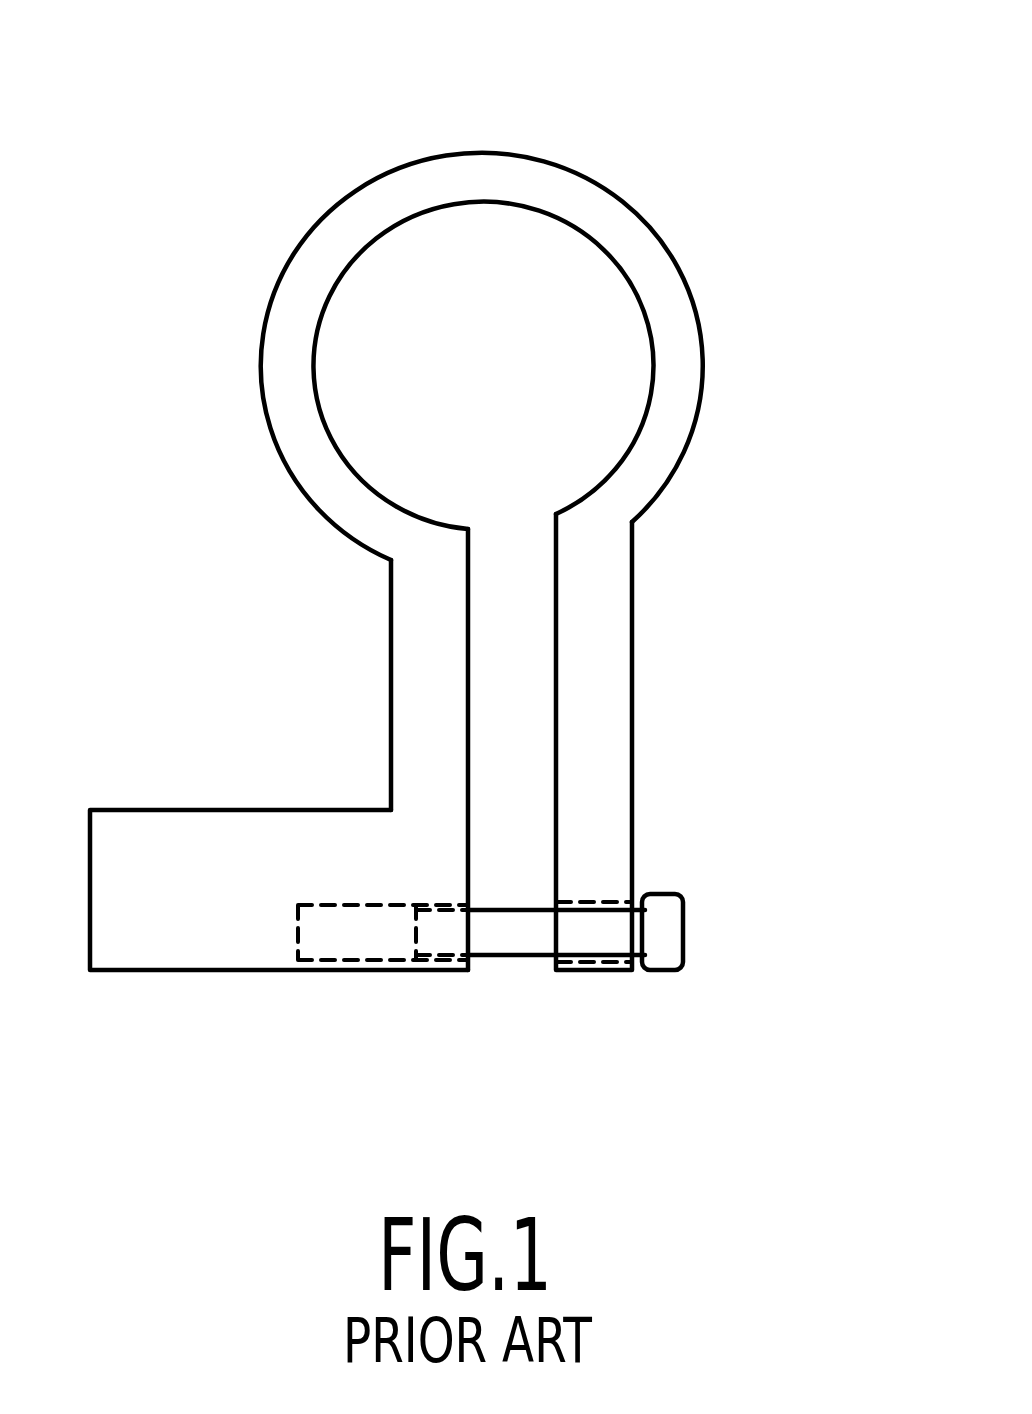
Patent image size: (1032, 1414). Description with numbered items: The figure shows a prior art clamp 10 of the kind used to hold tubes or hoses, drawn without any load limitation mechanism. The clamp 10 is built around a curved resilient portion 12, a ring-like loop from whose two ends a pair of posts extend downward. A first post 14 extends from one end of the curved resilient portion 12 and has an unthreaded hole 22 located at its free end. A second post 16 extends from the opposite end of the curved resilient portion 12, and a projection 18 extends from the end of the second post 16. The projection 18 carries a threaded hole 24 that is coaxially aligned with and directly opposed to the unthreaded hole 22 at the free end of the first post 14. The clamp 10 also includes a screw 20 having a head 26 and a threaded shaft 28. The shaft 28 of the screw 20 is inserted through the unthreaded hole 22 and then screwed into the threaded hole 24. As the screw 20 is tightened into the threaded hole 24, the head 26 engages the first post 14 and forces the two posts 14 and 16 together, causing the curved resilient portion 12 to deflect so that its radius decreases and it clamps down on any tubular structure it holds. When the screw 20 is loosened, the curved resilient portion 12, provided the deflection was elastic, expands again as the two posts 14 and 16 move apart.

The clamp 10 is at (451, 553).
The curved resilient portion 12 is at (348, 198).
The first post 14 is at (633, 627).
The second post 16 is at (391, 694).
The projection 18 is at (127, 972).
The screw 20 is at (638, 922).
The unthreaded hole 22 is at (603, 978).
The threaded hole 24 is at (365, 968).
The head 26 is at (684, 927).
The threaded shaft 28 is at (490, 957).